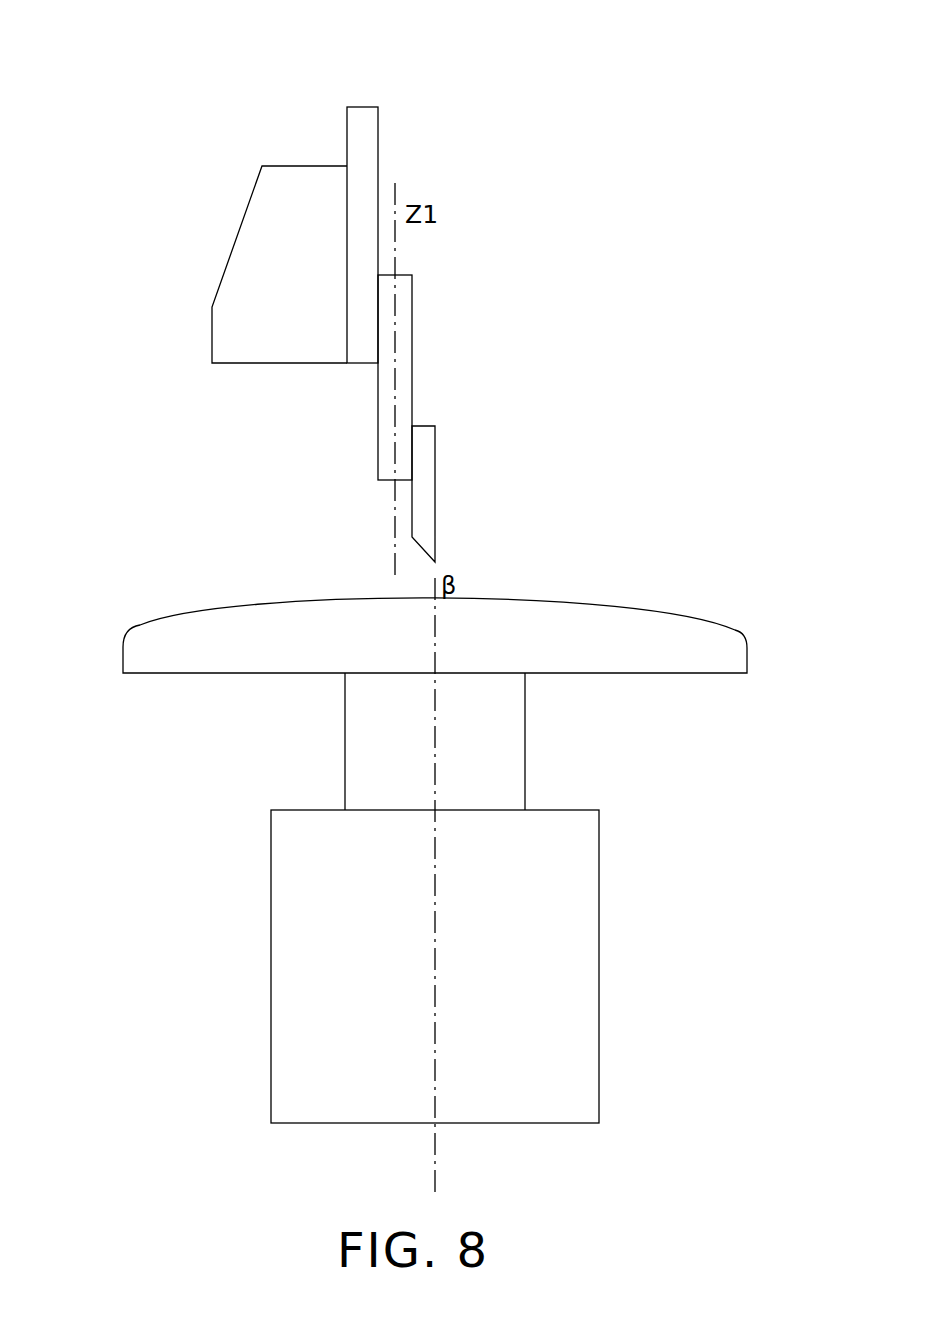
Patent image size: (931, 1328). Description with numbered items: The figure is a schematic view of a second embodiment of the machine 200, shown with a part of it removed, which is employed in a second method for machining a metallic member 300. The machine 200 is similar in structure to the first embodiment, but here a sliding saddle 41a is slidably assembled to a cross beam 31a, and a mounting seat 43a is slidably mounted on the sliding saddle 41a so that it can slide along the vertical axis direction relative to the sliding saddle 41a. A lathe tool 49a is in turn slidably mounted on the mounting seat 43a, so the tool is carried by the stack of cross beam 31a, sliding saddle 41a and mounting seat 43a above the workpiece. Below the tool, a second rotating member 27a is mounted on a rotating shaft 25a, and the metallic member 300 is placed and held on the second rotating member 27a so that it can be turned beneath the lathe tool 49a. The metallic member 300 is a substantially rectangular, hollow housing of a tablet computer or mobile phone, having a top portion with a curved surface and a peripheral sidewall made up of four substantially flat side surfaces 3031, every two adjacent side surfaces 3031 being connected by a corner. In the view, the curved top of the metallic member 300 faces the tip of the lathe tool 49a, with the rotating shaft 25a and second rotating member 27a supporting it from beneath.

The machine 200 is at (440, 47).
The sliding saddle 41a is at (357, 133).
The cross beam 31a is at (268, 220).
The mounting seat 43a is at (388, 434).
The lathe tool 49a is at (425, 517).
The metallic member 300 is at (668, 608).
The side surface 3031 is at (122, 657).
The second rotating member 27a is at (368, 752).
The rotating shaft 25a is at (545, 1018).